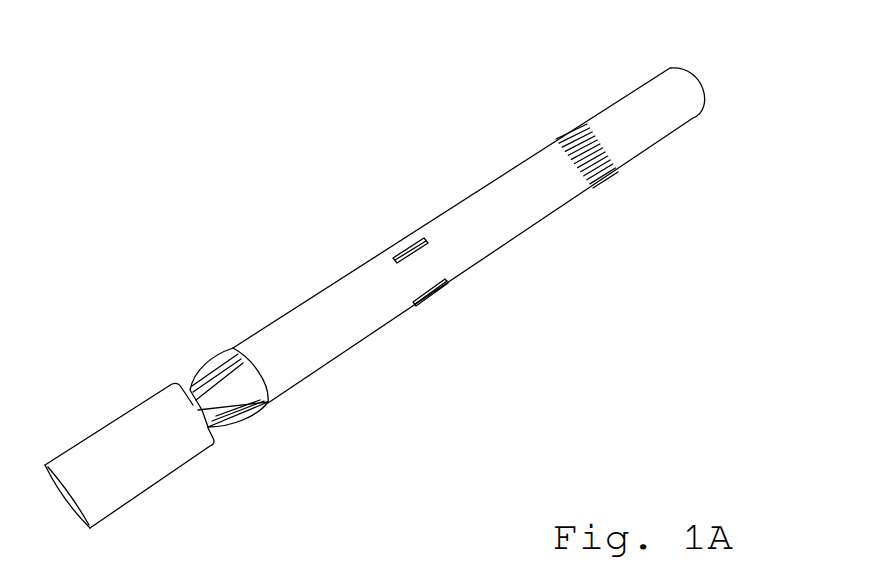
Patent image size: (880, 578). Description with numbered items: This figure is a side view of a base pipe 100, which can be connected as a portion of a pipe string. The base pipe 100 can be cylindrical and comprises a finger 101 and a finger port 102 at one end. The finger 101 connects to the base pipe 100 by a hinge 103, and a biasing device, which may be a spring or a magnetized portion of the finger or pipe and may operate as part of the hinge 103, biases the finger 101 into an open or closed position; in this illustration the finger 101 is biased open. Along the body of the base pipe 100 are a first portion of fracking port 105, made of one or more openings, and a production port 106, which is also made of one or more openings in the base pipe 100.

The base pipe 100 is at (492, 112).
The finger 101 is at (243, 402).
The finger port 102 is at (187, 382).
The hinge 103 is at (268, 392).
The first portion of fracking port 105 is at (430, 297).
The production port 106 is at (603, 180).